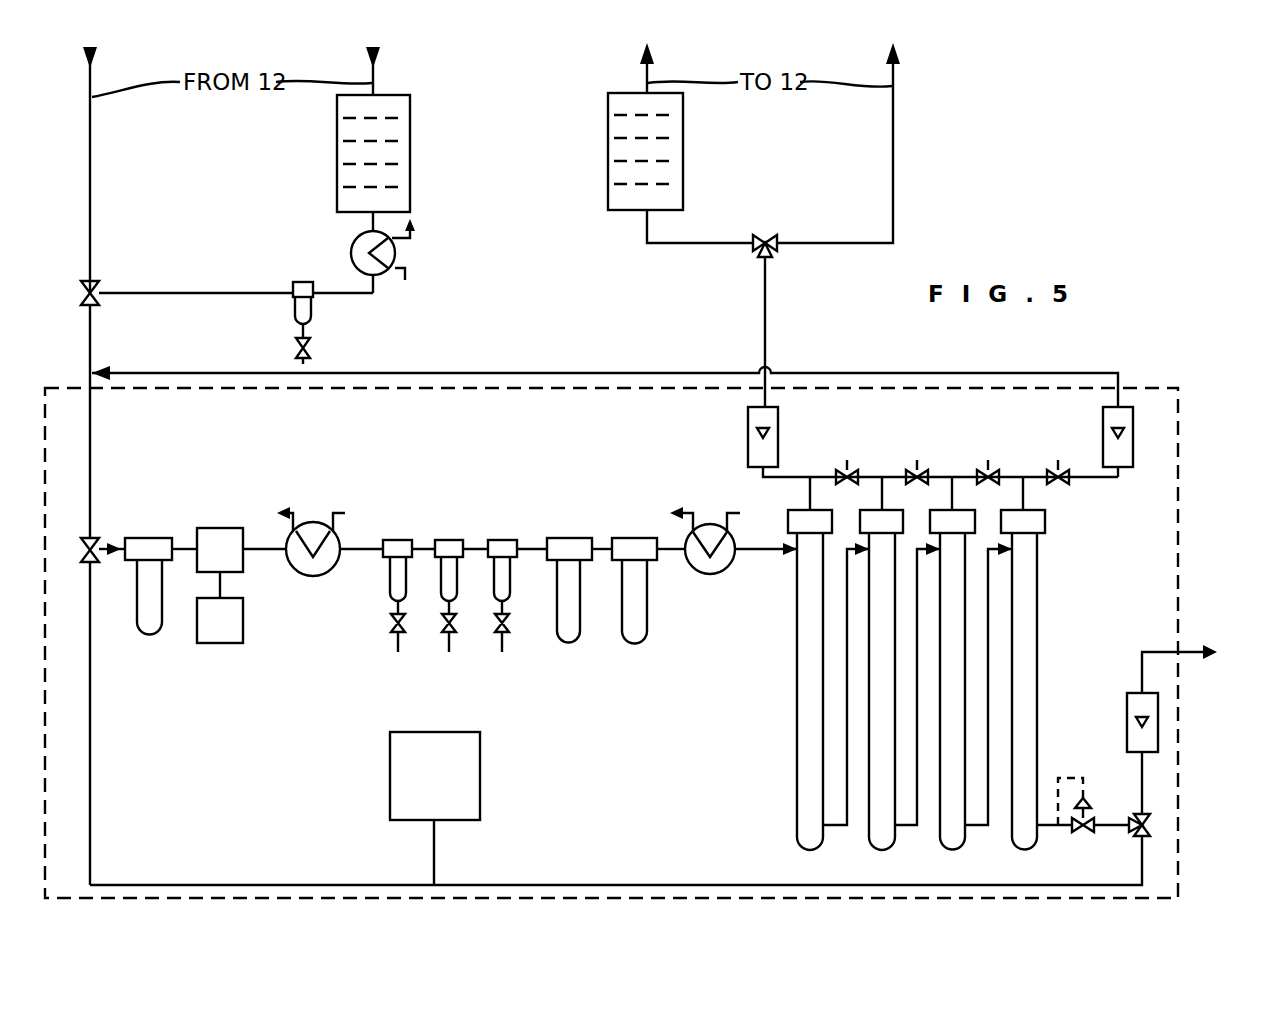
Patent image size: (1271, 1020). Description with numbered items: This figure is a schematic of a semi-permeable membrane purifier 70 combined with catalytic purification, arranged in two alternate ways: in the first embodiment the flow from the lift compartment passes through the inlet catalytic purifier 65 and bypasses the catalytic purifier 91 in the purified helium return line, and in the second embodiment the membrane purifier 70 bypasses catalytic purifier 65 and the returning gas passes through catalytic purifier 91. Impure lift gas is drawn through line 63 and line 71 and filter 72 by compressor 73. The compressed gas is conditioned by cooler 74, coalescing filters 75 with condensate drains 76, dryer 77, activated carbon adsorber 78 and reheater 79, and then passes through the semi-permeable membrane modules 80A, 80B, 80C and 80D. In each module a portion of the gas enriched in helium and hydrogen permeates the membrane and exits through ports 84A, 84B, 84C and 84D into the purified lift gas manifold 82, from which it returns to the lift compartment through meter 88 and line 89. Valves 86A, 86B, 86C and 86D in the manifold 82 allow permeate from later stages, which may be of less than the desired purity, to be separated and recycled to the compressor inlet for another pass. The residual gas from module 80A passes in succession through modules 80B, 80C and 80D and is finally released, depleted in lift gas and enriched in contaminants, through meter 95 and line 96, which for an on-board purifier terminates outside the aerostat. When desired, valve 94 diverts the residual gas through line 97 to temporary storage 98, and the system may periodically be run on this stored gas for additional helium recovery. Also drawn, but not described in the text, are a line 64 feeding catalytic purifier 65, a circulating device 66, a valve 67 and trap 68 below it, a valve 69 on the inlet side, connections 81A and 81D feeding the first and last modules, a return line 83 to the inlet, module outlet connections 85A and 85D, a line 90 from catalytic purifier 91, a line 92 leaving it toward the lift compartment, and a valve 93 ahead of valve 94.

The line 63 is at (92, 156).
The line to storage vessel 64 is at (376, 74).
The catalytic purifier 65 is at (336, 158).
The pump 66 is at (351, 246).
The drain valve 67 is at (295, 348).
The filter 68 is at (293, 286).
The valve 69 is at (96, 290).
The semi-permeable membrane purifier 70 is at (238, 741).
The line 71 is at (92, 470).
The filter 72 is at (149, 538).
The compressor 73 is at (220, 528).
The cooler 74 is at (312, 521).
The coalescing filters 75 is at (500, 540).
The condensate drains 76 is at (496, 637).
The dryer 77 is at (570, 538).
The activated carbon adsorber 78 is at (634, 538).
The reheater 79 is at (711, 524).
The semi-permeable membrane module 80A is at (803, 852).
The semi-permeable membrane module 80B is at (876, 852).
The semi-permeable membrane module 80C is at (949, 852).
The semi-permeable membrane module 80D is at (1021, 852).
The inlet line to column 81A is at (793, 553).
The inlet line to column 81D is at (1014, 548).
The purified lift gas manifold 82 is at (955, 433).
The return line 83 is at (900, 374).
The port 84A is at (808, 509).
The port 84B is at (881, 509).
The port 84C is at (952, 509).
The port 84D is at (1025, 509).
The column outlet line 85A is at (823, 830).
The column outlet line 85D is at (1040, 828).
The valve 86A is at (852, 460).
The valve 86B is at (922, 460).
The valve 86C is at (993, 460).
The valve 86D is at (1064, 460).
The meter 88 is at (778, 420).
The line 89 is at (820, 246).
The line from vessel 91 90 is at (716, 246).
The catalytic purifier 91 is at (684, 152).
The line to 12 92 is at (645, 78).
The control valve 93 is at (1090, 796).
The valve 94 is at (1150, 816).
The meter 95 is at (1126, 706).
The line 96 is at (1196, 667).
The line 97 is at (613, 885).
The temporary storage 98 is at (481, 778).